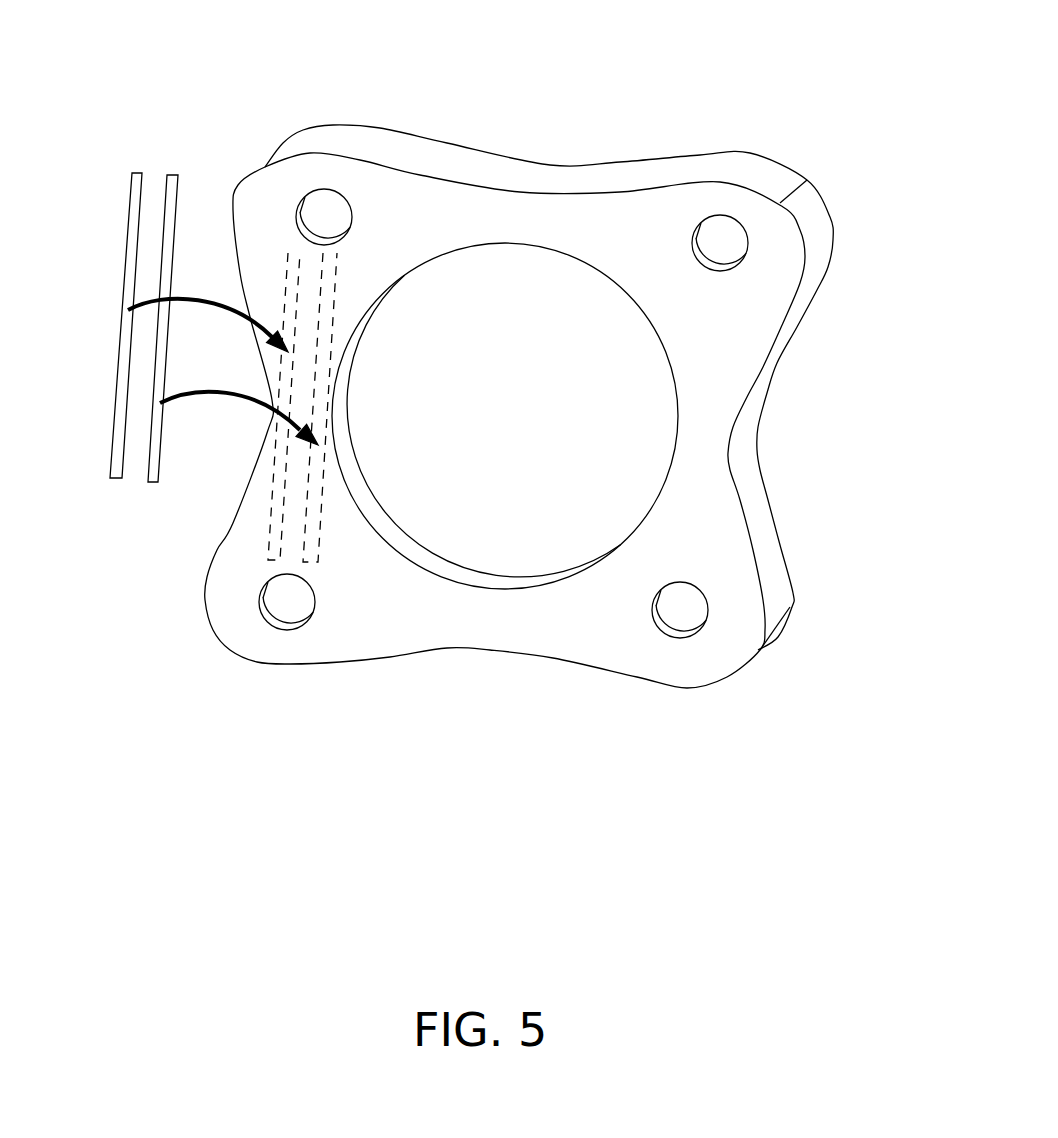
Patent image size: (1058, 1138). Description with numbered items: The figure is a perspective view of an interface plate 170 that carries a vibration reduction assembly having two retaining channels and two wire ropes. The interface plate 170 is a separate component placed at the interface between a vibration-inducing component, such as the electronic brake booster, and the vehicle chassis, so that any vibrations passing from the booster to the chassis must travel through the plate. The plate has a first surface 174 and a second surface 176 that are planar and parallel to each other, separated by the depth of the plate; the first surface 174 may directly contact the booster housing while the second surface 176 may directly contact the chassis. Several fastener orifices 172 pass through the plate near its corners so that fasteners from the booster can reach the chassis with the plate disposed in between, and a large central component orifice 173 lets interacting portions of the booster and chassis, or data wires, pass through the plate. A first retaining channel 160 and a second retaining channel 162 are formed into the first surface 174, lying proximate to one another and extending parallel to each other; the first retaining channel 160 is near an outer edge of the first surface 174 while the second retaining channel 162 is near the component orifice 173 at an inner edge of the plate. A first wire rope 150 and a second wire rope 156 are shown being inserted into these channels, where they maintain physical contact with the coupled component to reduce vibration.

The first wire rope 150 is at (130, 283).
The second wire rope 156 is at (157, 470).
The first retaining channel 160 is at (275, 494).
The second retaining channel 162 is at (308, 522).
The interface plate 170 is at (530, 376).
The fastener orifice 172 is at (318, 211).
The component orifice 173 is at (489, 528).
The first surface 174 is at (705, 530).
The second surface 176 is at (447, 143).